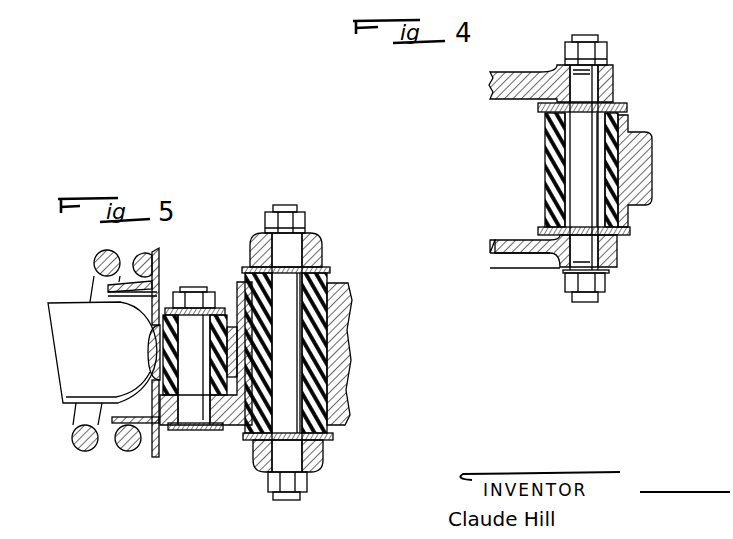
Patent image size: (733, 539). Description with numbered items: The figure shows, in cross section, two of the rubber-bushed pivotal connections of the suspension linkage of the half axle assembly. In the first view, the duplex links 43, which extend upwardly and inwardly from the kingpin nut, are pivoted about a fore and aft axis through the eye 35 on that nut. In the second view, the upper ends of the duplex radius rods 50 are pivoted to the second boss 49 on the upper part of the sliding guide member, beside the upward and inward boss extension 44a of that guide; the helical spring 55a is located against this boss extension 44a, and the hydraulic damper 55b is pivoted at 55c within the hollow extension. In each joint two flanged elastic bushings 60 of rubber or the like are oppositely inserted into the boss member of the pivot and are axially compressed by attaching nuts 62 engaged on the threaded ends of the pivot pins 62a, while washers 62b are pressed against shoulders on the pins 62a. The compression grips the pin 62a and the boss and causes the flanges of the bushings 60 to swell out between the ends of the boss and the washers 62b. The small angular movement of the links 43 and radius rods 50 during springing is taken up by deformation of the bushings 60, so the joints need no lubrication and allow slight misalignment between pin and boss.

In FIG. 4, the eye 35 is at (545, 173).
In FIG. 4, the duplex links 43 is at (500, 90).
In FIG. 5, the boss extension 44a is at (167, 290).
In FIG. 5, the second boss 49 is at (237, 293).
In FIG. 5, the duplex radius rods 50 is at (323, 238).
In FIG. 5, the helical spring 55a is at (73, 444).
In FIG. 5, the hydraulic damper 55b is at (73, 380).
In FIG. 5, the damper pivot 55c is at (203, 421).
In FIG. 4, the flanged elastic bushings 60 is at (628, 123).
In FIG. 5, the flanged elastic bushings 60 is at (323, 338).
In FIG. 4, the attaching nuts 62 is at (600, 54).
In FIG. 5, the attaching nuts 62 is at (302, 223).
In FIG. 4, the pivot pins 62a is at (570, 203).
In FIG. 5, the pivot pins 62a is at (295, 322).
In FIG. 4, the washers 62b is at (615, 103).
In FIG. 5, the washers 62b is at (327, 268).